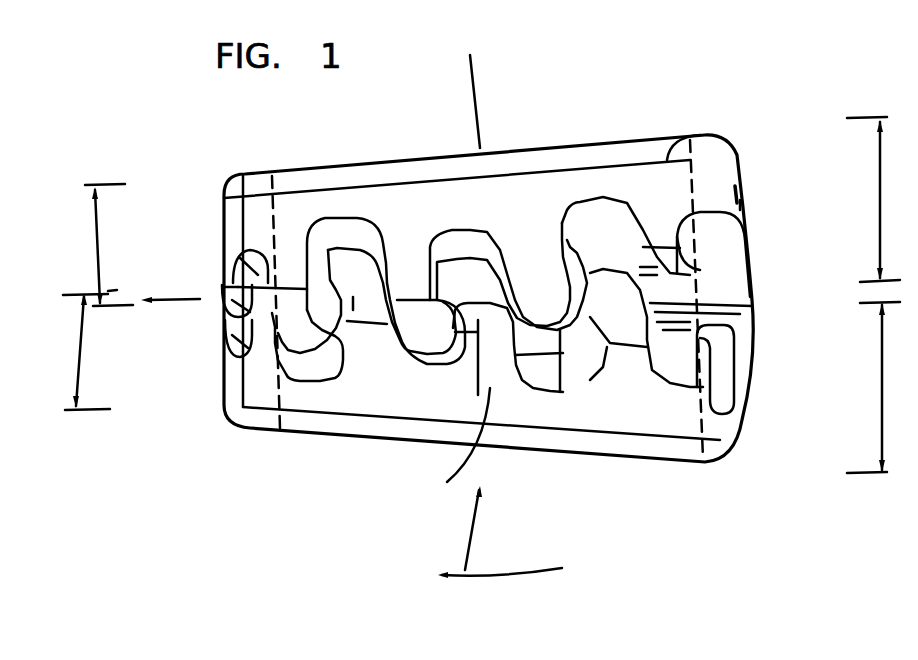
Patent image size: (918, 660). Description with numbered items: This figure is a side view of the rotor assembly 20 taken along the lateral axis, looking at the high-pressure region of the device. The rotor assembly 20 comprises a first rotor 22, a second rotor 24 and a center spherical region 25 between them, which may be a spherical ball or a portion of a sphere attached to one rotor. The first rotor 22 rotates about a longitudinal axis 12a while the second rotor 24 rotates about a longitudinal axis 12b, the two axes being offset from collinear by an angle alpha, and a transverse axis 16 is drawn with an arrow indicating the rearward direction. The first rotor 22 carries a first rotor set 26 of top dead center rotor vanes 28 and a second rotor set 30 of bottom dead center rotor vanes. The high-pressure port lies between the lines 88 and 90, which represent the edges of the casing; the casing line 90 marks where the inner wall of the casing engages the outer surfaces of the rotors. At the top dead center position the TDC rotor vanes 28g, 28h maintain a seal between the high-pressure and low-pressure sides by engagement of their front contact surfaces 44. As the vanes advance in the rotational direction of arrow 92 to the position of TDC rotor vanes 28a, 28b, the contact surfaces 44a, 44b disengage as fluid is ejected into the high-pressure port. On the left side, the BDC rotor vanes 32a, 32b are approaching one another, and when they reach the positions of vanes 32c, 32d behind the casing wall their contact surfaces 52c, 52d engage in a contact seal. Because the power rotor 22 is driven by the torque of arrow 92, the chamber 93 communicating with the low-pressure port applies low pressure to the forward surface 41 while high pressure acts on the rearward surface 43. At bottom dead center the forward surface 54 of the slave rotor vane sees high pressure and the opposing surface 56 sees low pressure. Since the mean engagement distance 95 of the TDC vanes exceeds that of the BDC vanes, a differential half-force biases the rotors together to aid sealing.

The rotor assembly 20 is at (197, 148).
The longitudinal axis 12a is at (476, 538).
The longitudinal axis 12b is at (478, 88).
The transverse axis 16 is at (175, 300).
The first rotor 22 is at (725, 432).
The second rotor 24 is at (720, 160).
The center spherical region 25 is at (476, 270).
The first rotor set 26 is at (337, 218).
The top dead center rotor vane 28 is at (357, 300).
The TDC rotor vane 28a is at (617, 323).
The inverted TDC rotor vane 28b is at (523, 265).
The TDC rotor vane 28g is at (758, 338).
The TDC rotor vane 28h is at (713, 255).
The second rotor set 30 is at (454, 441).
The BDC rotor vane 32a is at (465, 430).
The BDC rotor vane 32b is at (400, 265).
The BDC rotor vane 32c is at (222, 357).
The BDC rotor vane 32d is at (238, 303).
The forward surface 41 is at (745, 200).
The rearward surface 43 is at (740, 273).
The front contact surface 44 is at (758, 297).
The contact surface 44a is at (607, 242).
The contact surface 44b is at (570, 325).
The contact surface 52c is at (235, 280).
The contact surface 52d is at (233, 327).
The forward surface 54 is at (247, 268).
The surface 56 is at (230, 320).
The casing edge line 88 is at (688, 140).
The casing line 90 is at (278, 410).
The arrow indicating rotation 92 is at (522, 577).
The chamber 93 is at (745, 211).
The mean engagement distance 95 is at (878, 205).